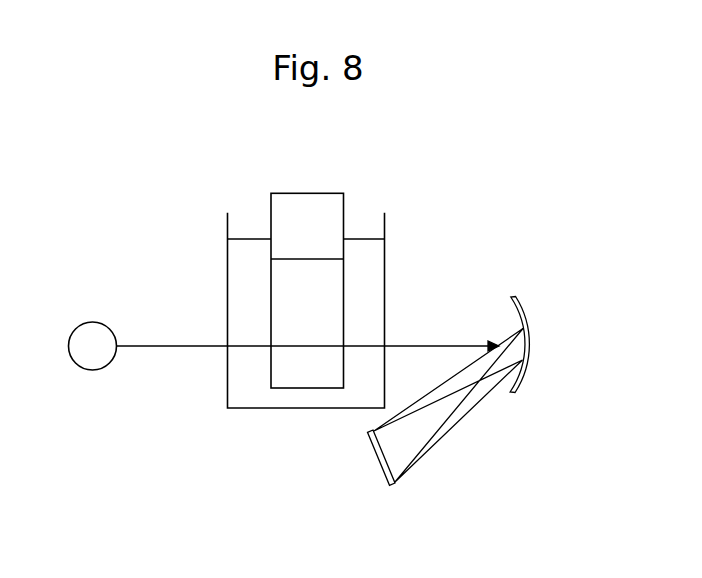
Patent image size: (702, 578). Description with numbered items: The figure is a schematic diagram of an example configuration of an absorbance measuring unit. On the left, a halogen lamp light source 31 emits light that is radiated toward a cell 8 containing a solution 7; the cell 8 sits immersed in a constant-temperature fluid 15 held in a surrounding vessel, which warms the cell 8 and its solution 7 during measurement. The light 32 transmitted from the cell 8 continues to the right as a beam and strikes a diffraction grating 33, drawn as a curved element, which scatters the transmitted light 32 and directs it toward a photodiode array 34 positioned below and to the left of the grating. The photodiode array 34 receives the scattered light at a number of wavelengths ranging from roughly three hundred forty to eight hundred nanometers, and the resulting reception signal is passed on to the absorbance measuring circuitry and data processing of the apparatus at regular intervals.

The solution 7 is at (305, 259).
The cell 8 is at (305, 193).
The constant-temperature fluid 15 is at (252, 250).
The halogen lamp light source 31 is at (96, 322).
The light 32 is at (431, 344).
The diffraction grating 33 is at (529, 316).
The photodiode array 34 is at (387, 474).